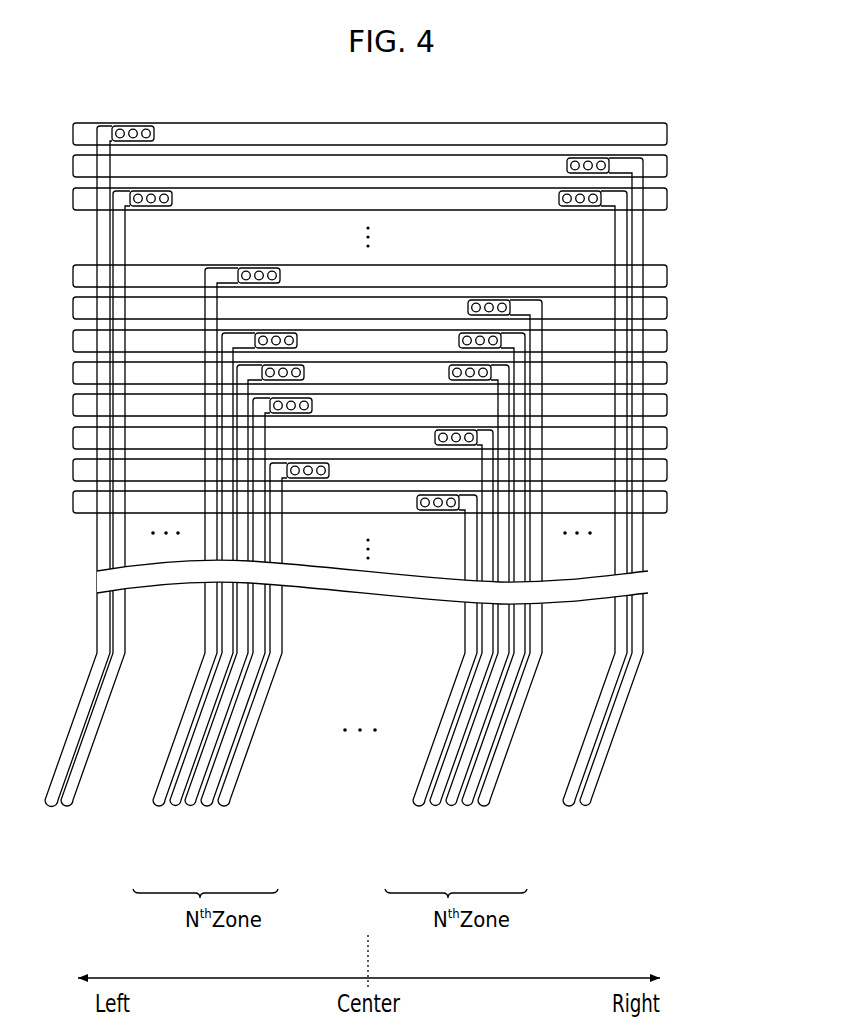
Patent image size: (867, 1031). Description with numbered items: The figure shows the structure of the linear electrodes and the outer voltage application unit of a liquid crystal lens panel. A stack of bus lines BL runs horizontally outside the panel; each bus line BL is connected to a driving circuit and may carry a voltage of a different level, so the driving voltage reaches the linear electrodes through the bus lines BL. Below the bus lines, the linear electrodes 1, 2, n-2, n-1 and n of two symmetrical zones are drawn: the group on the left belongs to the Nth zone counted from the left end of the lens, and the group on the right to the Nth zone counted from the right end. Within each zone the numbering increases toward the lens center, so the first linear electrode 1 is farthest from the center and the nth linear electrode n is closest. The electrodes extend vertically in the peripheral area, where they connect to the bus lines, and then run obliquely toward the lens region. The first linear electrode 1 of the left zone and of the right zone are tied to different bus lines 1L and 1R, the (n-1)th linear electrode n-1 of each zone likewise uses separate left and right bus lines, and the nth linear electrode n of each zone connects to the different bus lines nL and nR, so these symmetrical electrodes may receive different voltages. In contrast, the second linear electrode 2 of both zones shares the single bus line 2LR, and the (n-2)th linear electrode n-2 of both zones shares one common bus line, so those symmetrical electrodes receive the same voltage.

The bus line BL is at (391, 318).
The first left bus line 1L is at (668, 277).
The first right bus line 1R is at (668, 310).
The second left-right bus line 2LR is at (668, 343).
The nth left bus line nL is at (668, 472).
The nth right bus line nR is at (668, 505).
The first linear electrode 1 is at (151, 808).
The second linear electrode 2 is at (170, 810).
The (n-2)th linear electrode n-2 is at (190, 810).
The (n-1)th linear electrode n-1 is at (207, 810).
The nth linear electrode n is at (224, 808).